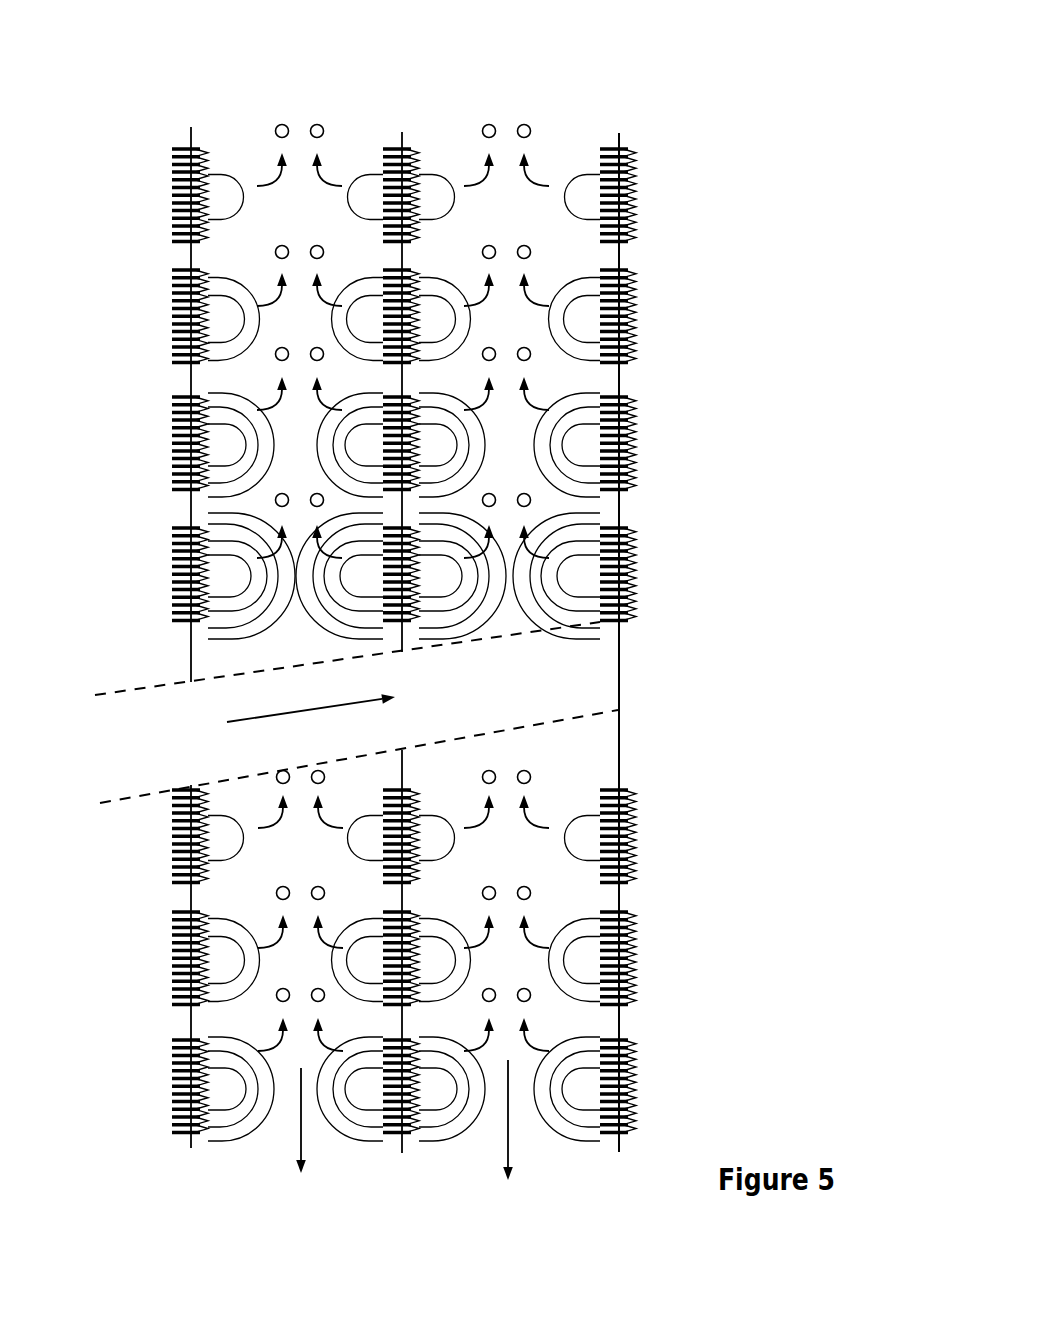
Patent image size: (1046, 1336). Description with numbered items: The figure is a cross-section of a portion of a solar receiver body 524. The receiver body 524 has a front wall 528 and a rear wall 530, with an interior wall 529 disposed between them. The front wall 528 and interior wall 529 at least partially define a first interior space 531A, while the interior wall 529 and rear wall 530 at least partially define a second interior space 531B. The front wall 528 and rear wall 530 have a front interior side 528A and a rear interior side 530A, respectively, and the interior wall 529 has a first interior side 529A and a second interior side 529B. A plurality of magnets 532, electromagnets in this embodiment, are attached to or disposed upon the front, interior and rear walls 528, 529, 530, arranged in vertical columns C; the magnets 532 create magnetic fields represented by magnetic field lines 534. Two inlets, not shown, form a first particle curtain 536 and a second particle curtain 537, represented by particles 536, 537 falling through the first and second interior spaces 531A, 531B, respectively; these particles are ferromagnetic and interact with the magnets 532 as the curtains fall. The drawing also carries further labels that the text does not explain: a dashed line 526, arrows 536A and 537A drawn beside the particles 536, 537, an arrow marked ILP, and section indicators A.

The receiver body 524 is at (162, 82).
The imaginary line/plane boundary 526 is at (153, 713).
The front wall 528 is at (183, 385).
The front interior side 528A is at (191, 1148).
The interior wall 529 is at (398, 150).
The first interior side 529A is at (402, 1153).
The second interior side 529B is at (402, 1150).
The rear wall 530 is at (622, 392).
The rear interior side 530A is at (618, 1145).
The first interior space 531A is at (222, 260).
The second interior space 531B is at (600, 260).
The magnets 532 is at (628, 153).
The magnetic field lines 534 is at (380, 152).
The first particle curtain 536 is at (308, 64).
The first flux direction arrows 536A is at (292, 106).
The second particle curtain 537 is at (502, 67).
The second flux direction arrows 537A is at (516, 112).
The vertical columns C is at (615, 118).
The interleaf plane direction ILP is at (265, 717).
The section direction A is at (405, 1135).